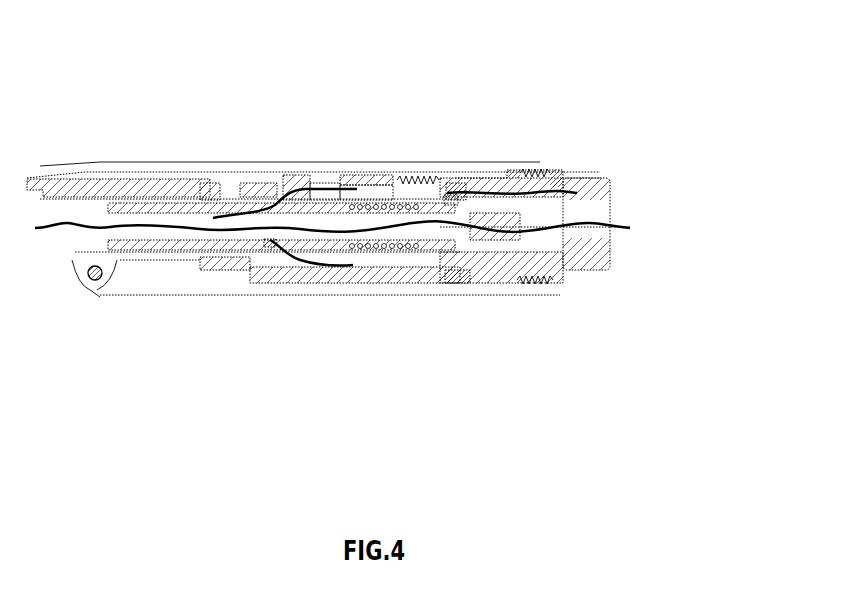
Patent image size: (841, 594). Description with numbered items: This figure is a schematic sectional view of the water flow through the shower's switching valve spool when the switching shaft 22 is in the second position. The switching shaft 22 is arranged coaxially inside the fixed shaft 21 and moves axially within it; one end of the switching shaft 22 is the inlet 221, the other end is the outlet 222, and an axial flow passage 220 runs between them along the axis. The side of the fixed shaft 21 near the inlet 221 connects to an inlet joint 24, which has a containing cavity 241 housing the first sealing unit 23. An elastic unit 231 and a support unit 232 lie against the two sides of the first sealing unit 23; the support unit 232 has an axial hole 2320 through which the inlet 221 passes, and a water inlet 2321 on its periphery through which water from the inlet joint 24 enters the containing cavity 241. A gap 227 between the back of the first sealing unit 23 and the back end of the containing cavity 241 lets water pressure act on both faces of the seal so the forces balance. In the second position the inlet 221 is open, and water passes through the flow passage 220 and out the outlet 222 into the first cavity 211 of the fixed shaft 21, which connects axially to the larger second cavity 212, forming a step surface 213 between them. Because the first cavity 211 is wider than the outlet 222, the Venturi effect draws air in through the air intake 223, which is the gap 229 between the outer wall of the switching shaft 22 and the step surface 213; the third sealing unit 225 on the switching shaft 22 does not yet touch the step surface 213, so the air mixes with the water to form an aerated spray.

The fixed shaft 21 is at (290, 183).
The first cavity 211 is at (131, 187).
The second cavity 212 is at (367, 187).
The step surface 213 is at (270, 255).
The switching shaft 22 is at (380, 265).
The axial flow passage 220 is at (397, 232).
The inlet 221 is at (457, 187).
The outlet 222 is at (233, 190).
The air intake 223 is at (283, 255).
The third sealing unit 225 is at (303, 187).
The gap 227 is at (480, 206).
The gap 229 is at (270, 243).
The first sealing unit 23 is at (545, 270).
The elastic unit 231 is at (540, 262).
The support unit 232 is at (453, 280).
The hole 2320 is at (450, 236).
The water inlet 2321 is at (450, 198).
The inlet joint 24 is at (558, 180).
The containing cavity 241 is at (425, 165).